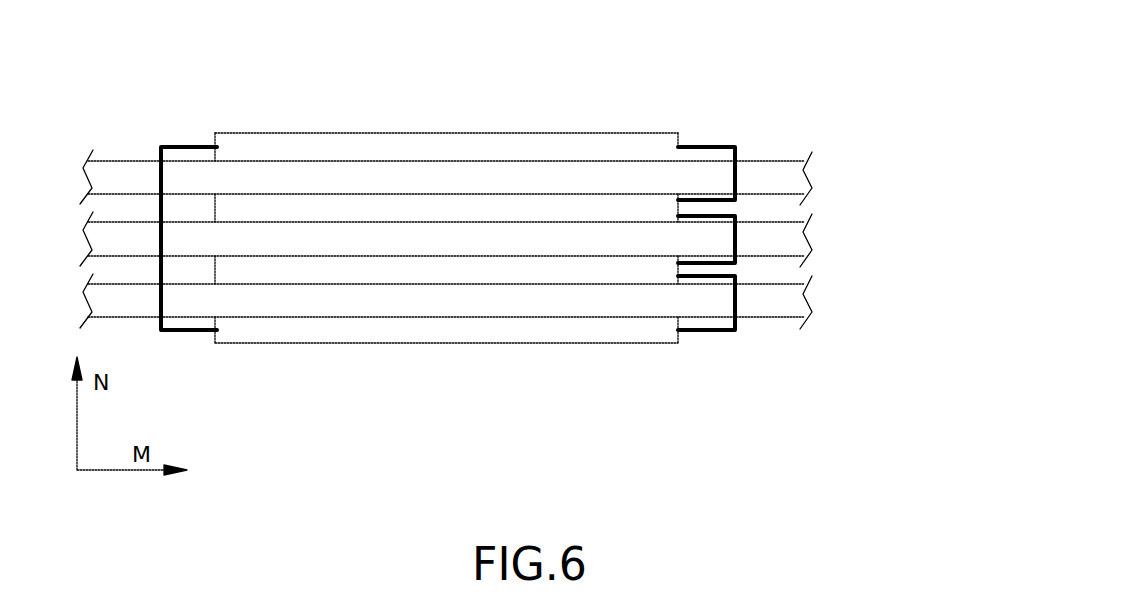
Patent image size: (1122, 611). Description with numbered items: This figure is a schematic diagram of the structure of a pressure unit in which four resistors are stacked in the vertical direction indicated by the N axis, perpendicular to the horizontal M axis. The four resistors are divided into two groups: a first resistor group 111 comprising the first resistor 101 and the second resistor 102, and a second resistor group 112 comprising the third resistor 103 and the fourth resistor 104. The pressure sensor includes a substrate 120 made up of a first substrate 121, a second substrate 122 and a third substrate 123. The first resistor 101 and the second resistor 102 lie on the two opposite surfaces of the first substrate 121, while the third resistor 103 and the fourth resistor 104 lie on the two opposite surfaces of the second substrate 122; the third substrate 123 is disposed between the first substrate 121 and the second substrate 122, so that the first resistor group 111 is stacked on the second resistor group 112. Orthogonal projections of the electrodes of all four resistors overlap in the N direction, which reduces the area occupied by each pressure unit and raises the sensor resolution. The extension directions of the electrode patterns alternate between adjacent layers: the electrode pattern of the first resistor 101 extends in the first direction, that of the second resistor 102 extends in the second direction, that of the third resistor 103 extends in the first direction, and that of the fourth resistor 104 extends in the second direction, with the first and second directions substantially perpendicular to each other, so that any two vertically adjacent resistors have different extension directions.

The first resistor 101 is at (378, 145).
The second resistor 102 is at (375, 70).
The third resistor 103 is at (353, 273).
The fourth resistor 104 is at (362, 398).
The first resistor group 111 is at (446, 125).
The second resistor group 112 is at (446, 357).
The substrate 120 is at (828, 238).
The first substrate 121 is at (787, 183).
The second substrate 122 is at (787, 305).
The third substrate 123 is at (787, 245).